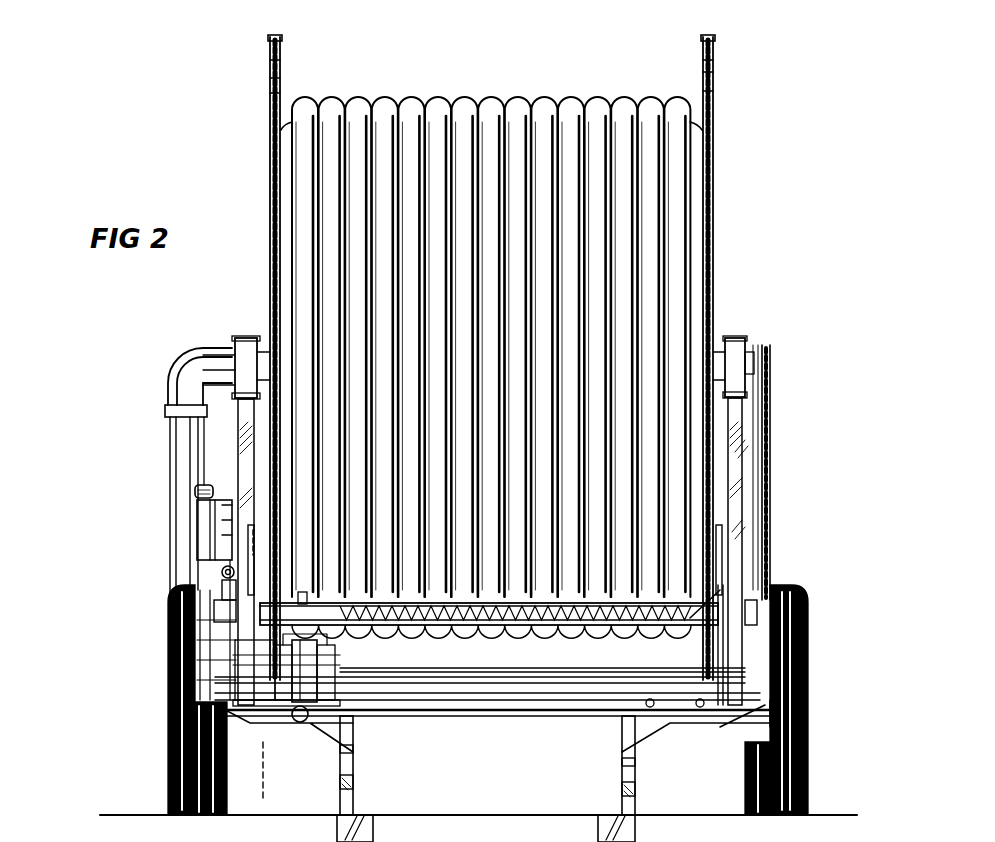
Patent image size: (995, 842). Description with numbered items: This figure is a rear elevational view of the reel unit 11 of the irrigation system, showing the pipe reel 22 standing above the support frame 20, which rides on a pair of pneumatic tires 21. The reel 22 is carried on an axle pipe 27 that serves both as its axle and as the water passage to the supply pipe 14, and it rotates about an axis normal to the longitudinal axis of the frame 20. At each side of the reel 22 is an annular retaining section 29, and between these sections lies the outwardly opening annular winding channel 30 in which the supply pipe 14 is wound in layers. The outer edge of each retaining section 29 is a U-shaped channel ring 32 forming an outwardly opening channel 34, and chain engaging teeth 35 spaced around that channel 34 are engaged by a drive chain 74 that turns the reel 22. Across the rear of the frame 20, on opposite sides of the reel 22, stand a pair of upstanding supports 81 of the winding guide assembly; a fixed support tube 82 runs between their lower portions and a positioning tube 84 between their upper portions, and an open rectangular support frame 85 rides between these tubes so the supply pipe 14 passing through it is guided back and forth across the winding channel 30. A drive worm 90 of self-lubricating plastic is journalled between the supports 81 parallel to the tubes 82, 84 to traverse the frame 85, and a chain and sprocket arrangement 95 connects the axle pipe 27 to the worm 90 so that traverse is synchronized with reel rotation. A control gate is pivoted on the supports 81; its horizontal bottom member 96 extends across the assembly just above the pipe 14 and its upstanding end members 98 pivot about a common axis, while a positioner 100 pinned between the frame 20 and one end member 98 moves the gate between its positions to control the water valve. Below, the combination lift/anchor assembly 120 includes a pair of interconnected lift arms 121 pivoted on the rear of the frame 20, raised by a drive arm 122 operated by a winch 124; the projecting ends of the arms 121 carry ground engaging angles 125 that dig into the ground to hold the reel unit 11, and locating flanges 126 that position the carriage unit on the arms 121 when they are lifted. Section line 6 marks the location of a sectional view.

The reel unit 11 is at (178, 298).
The supply pipe 14 is at (482, 102).
The support frame 20 is at (750, 441).
The pneumatic tires 21 is at (170, 680).
The pipe reel 22 is at (714, 242).
The axle pipe 27 is at (262, 342).
The annular retaining sections 29 is at (283, 75).
The annular winding channel 30 is at (560, 62).
The channel ring 32 is at (270, 65).
The channel 34 is at (283, 38).
The chain engaging teeth 35 is at (270, 92).
The drive chain 74 is at (270, 158).
The upstanding supports 81 is at (215, 645).
The support tube 82 is at (456, 692).
The positioning tube 84 is at (408, 612).
The support frame 85 is at (345, 672).
The drive worm 90 is at (497, 622).
The chain and sprocket arrangement 95 is at (770, 476).
The bottom member 96 is at (628, 628).
The end members 98 is at (228, 588).
The positioner 100 is at (222, 568).
The lift/anchor assembly 120 is at (353, 758).
The lift arms 121 is at (350, 748).
The drive arm 122 is at (205, 522).
The winch 124 is at (205, 490).
The ground engaging angles 125 is at (368, 832).
The locating flange 126 is at (353, 790).
The section line 6 is at (253, 542).